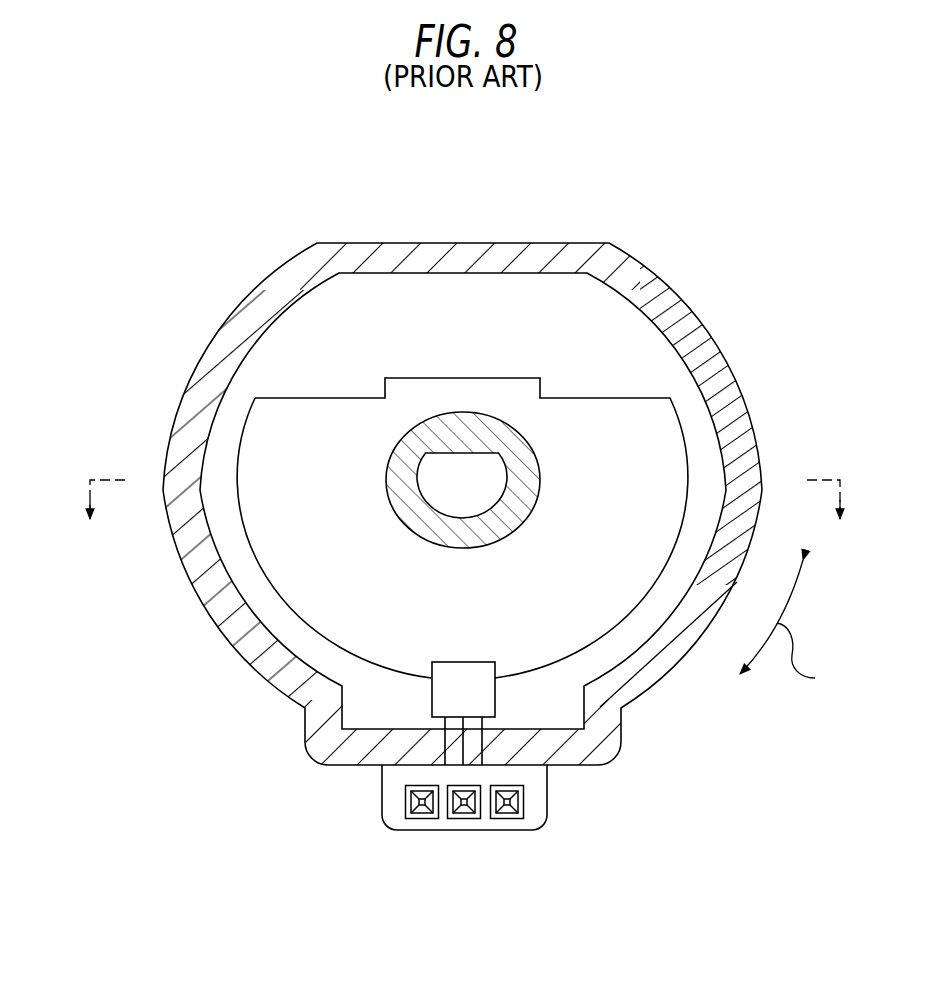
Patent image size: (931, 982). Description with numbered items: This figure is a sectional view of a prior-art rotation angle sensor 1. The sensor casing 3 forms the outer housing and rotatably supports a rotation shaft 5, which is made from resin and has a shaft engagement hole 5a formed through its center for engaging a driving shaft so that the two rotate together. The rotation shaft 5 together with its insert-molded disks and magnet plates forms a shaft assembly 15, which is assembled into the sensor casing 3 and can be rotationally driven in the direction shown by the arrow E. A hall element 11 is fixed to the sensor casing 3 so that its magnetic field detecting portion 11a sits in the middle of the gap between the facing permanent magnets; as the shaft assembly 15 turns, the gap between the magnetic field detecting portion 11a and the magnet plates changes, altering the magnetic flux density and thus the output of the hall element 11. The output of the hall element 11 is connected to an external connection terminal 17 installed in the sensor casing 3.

The rotation angle sensor 1 is at (553, 219).
The sensor casing 3 is at (660, 277).
The rotation shaft 5 is at (441, 427).
The shaft engagement hole 5a is at (463, 470).
The hall element 11 is at (431, 695).
The magnetic field detecting portion 11a is at (480, 695).
The shaft assembly 15 is at (335, 397).
The external connection terminal 17 is at (500, 819).